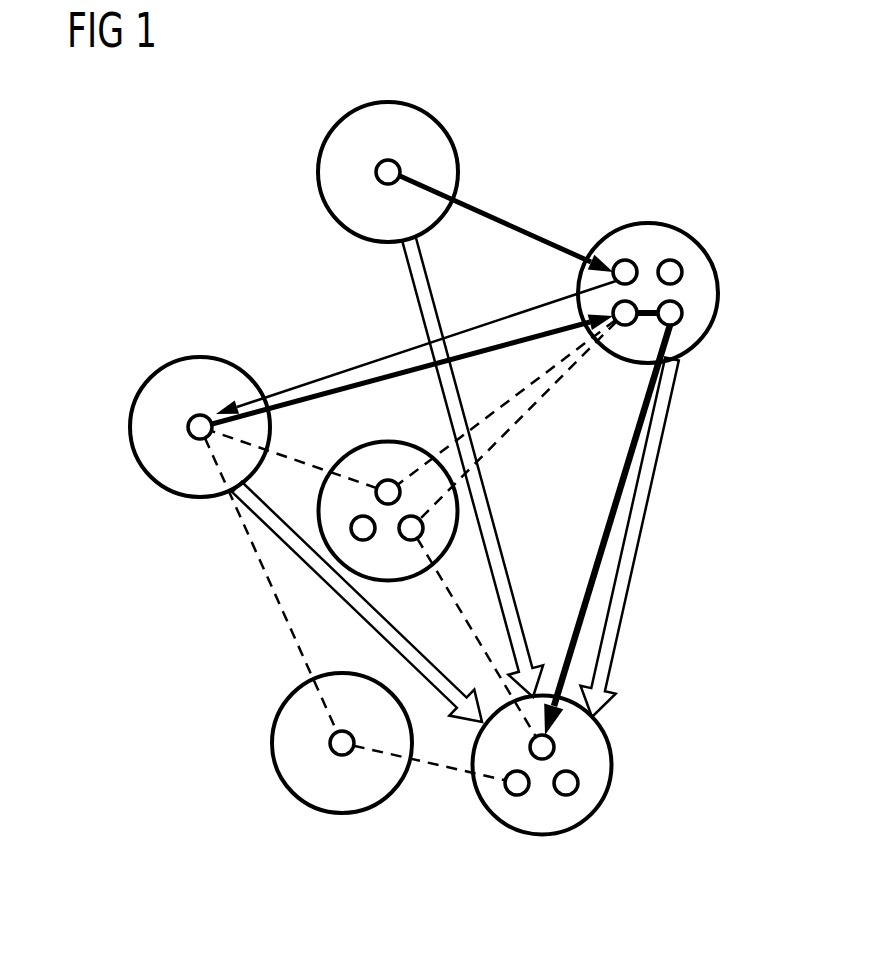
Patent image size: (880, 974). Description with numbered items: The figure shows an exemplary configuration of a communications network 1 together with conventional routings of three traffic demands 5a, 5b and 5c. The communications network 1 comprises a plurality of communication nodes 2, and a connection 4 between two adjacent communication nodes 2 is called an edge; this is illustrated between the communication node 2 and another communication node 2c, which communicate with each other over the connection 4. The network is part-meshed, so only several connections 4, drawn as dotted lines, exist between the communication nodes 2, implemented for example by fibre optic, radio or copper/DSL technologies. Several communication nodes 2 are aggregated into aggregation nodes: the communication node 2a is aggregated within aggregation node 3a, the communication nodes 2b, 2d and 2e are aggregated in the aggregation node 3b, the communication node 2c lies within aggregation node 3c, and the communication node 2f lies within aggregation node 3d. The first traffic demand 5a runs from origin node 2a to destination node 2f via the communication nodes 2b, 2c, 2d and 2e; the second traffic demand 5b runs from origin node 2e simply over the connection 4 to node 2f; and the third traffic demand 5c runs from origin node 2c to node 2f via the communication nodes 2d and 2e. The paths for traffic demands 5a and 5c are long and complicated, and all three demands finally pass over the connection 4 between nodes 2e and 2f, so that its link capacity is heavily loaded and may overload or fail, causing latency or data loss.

The communications network 1 is at (168, 209).
The communication node 2 is at (331, 741).
The communication node 2a is at (387, 160).
The communication node 2b is at (626, 260).
The communication node 2c is at (200, 414).
The communication node 2d is at (624, 326).
The communication node 2e is at (683, 310).
The communication node 2f is at (554, 748).
The aggregation node 3a is at (318, 172).
The aggregation node 3b is at (645, 223).
The aggregation node 3c is at (132, 427).
The aggregation node 3d is at (541, 835).
The connection 4 is at (282, 607).
The first traffic demand 5a is at (406, 276).
The second traffic demand 5b is at (651, 496).
The third traffic demand 5c is at (363, 617).